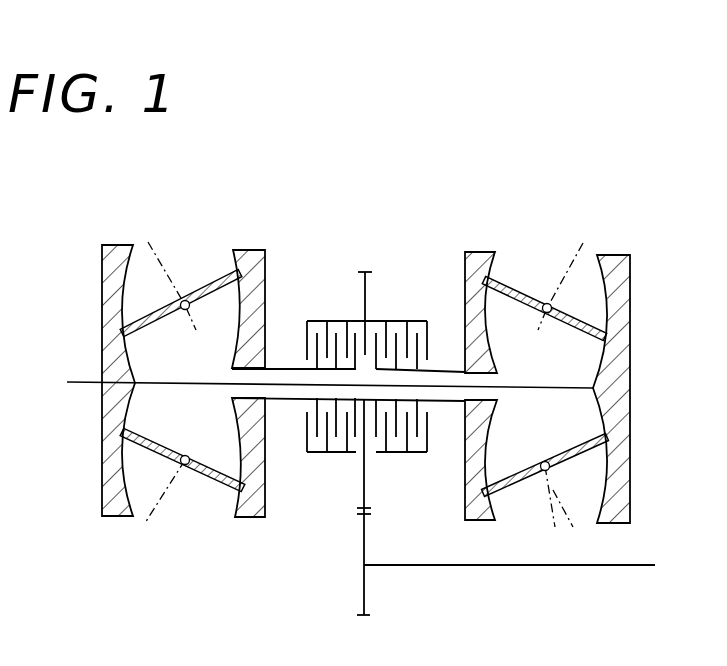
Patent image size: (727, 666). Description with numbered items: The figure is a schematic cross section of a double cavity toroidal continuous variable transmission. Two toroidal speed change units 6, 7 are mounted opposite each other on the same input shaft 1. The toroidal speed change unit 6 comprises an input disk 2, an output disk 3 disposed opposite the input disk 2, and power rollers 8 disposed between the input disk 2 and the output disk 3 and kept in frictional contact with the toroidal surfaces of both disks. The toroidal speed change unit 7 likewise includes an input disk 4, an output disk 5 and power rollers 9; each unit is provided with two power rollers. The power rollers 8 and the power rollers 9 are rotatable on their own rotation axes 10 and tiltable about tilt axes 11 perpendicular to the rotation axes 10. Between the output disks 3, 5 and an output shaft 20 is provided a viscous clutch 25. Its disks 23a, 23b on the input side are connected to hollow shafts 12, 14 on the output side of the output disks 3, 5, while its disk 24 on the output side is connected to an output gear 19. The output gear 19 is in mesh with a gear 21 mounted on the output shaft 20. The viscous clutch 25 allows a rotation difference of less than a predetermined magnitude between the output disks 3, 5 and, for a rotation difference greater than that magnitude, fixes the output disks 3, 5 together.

The input shaft 1 is at (88, 385).
The input disk 2 is at (100, 292).
The output disk 3 is at (267, 273).
The input disk 4 is at (625, 307).
The output disk 5 is at (462, 282).
The toroidal speed change unit 6 is at (171, 350).
The toroidal speed change unit 7 is at (560, 366).
The power rollers 8 is at (213, 285).
The power rollers 9 is at (513, 290).
The rotation axes 10 is at (363, 385).
The tilt axes 11 is at (181, 312).
The hollow shaft 12 is at (296, 350).
The hollow shaft 14 is at (447, 366).
The output gear 19 is at (359, 270).
The output shaft 20 is at (497, 567).
The gear 21 is at (362, 596).
The disk 23a is at (355, 336).
The disk 23b is at (419, 344).
The disk 24 is at (332, 432).
The viscous clutch 25 is at (387, 297).